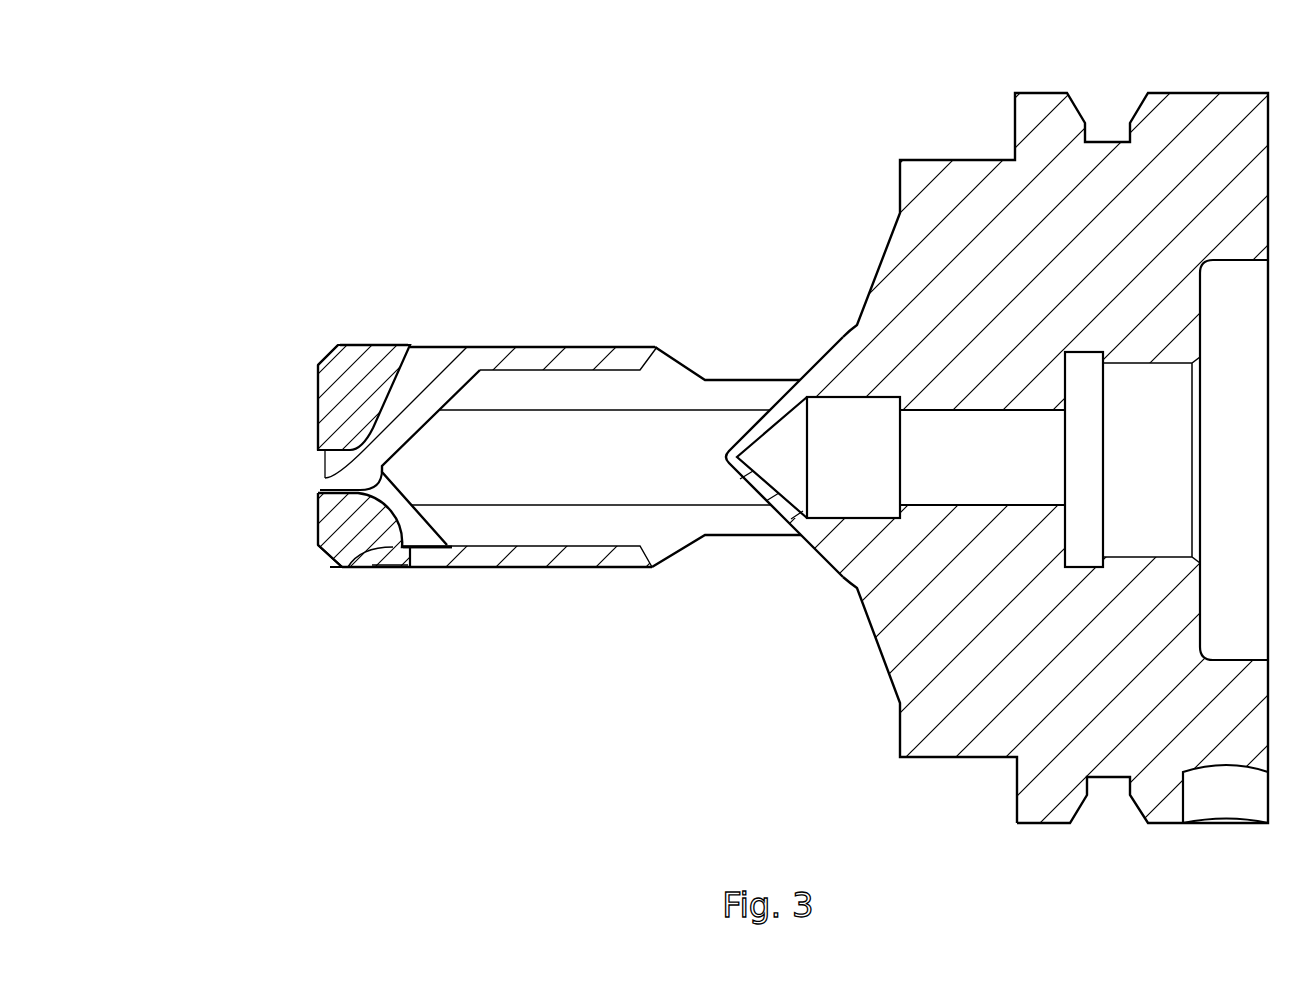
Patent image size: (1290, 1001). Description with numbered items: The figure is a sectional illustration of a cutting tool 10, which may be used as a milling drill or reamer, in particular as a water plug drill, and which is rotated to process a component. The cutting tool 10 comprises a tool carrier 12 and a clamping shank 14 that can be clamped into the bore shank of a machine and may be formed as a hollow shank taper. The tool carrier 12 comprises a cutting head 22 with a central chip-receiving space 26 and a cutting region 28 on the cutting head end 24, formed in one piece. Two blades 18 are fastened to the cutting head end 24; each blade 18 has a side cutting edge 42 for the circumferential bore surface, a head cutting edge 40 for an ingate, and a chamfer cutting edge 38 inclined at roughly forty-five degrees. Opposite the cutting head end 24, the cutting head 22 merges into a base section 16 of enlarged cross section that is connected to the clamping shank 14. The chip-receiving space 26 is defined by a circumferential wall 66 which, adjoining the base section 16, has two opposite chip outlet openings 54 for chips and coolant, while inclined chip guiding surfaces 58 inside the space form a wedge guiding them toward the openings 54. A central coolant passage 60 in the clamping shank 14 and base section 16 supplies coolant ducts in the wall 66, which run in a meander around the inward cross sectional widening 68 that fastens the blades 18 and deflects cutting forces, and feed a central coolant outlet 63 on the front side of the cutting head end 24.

The cutting tool 10 is at (272, 160).
The tool carrier 12 is at (595, 226).
The clamping shank 14 is at (1180, 117).
The base section 16 is at (935, 745).
The blade 18 is at (346, 332).
The cutting head 22 is at (518, 619).
The cutting head end 24 is at (242, 352).
The chip-receiving space 26 is at (585, 471).
The cutting region 28 is at (301, 416).
The chamfer cutting edge 38 is at (332, 365).
The head cutting edge 40 is at (318, 405).
The side cutting edge 42 is at (388, 345).
The chip outlet opening 54 is at (740, 380).
The chip guiding surface 58 is at (785, 395).
The central coolant passage 60 is at (950, 460).
The central coolant outlet 63 is at (333, 483).
The circumferential wall 66 is at (542, 348).
The cross sectional widening 68 is at (415, 323).